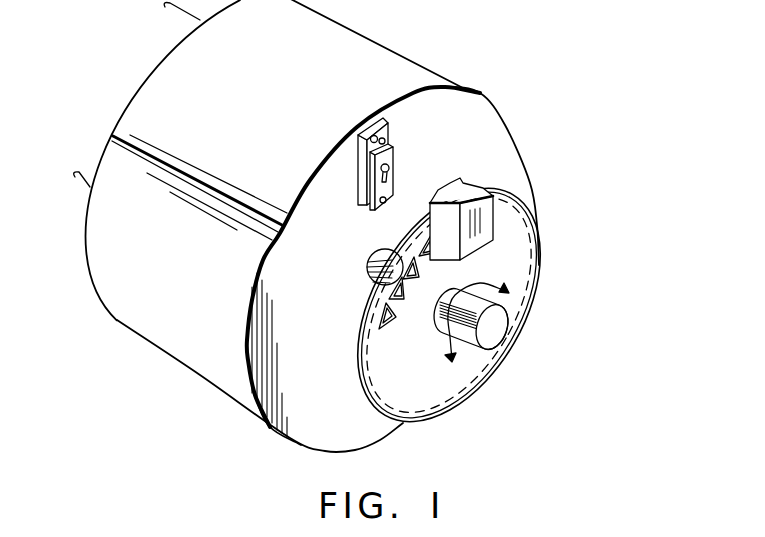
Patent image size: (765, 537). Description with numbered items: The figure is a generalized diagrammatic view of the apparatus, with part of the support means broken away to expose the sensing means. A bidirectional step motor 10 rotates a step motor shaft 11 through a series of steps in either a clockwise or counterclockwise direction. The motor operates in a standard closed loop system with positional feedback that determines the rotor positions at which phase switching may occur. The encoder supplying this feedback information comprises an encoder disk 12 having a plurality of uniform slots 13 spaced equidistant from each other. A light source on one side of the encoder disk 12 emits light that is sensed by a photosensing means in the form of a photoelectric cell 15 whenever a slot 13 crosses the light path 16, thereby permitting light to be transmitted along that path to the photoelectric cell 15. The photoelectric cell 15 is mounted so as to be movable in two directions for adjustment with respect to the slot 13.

The bidirectional step motor 10 is at (289, 94).
The step motor shaft 11 is at (500, 310).
The encoder disk 12 is at (528, 258).
The slots 13 is at (378, 273).
The photoelectric cell 15 is at (370, 207).
The light path 16 is at (430, 229).